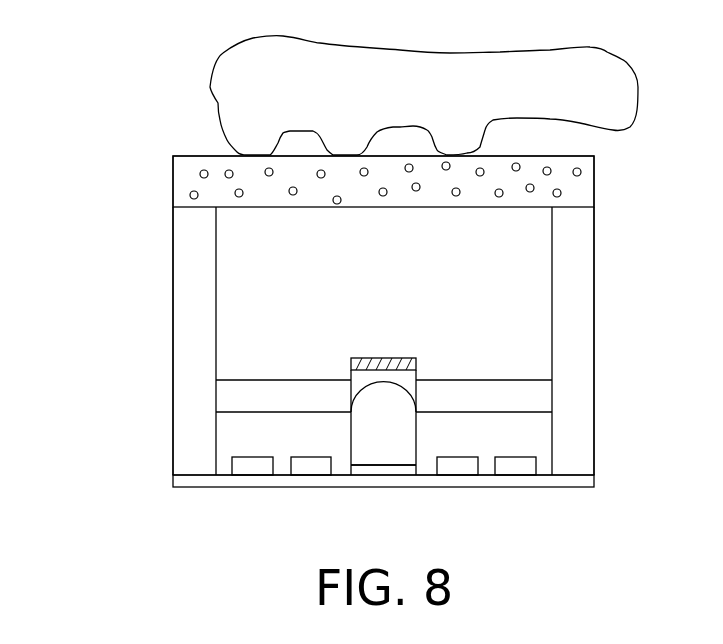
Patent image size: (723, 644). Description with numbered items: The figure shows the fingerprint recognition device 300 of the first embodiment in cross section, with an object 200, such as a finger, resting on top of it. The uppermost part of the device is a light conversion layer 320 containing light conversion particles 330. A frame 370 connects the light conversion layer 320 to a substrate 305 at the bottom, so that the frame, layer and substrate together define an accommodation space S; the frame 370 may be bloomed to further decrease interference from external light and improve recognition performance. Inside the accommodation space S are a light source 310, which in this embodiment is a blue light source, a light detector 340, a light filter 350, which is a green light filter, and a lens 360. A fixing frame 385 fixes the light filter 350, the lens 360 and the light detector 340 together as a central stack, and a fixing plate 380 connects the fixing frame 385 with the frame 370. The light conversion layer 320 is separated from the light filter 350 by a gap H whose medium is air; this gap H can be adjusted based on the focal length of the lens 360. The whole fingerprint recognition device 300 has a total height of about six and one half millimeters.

The finger / object 200 is at (627, 87).
The fingerprint recognition device 300 is at (95, 168).
The light conversion layer 320 is at (183, 197).
The light conversion particles 330 is at (580, 176).
The frame 370 is at (577, 307).
The light filter 350 is at (420, 357).
The fixing plate 380 is at (535, 400).
The fixing frame 385 is at (420, 434).
The lens 360 is at (365, 437).
The light detector 340 is at (388, 472).
The light source 310 is at (245, 468).
The substrate 305 is at (578, 480).
The accommodation space S is at (216, 305).
The gap H is at (384, 207).